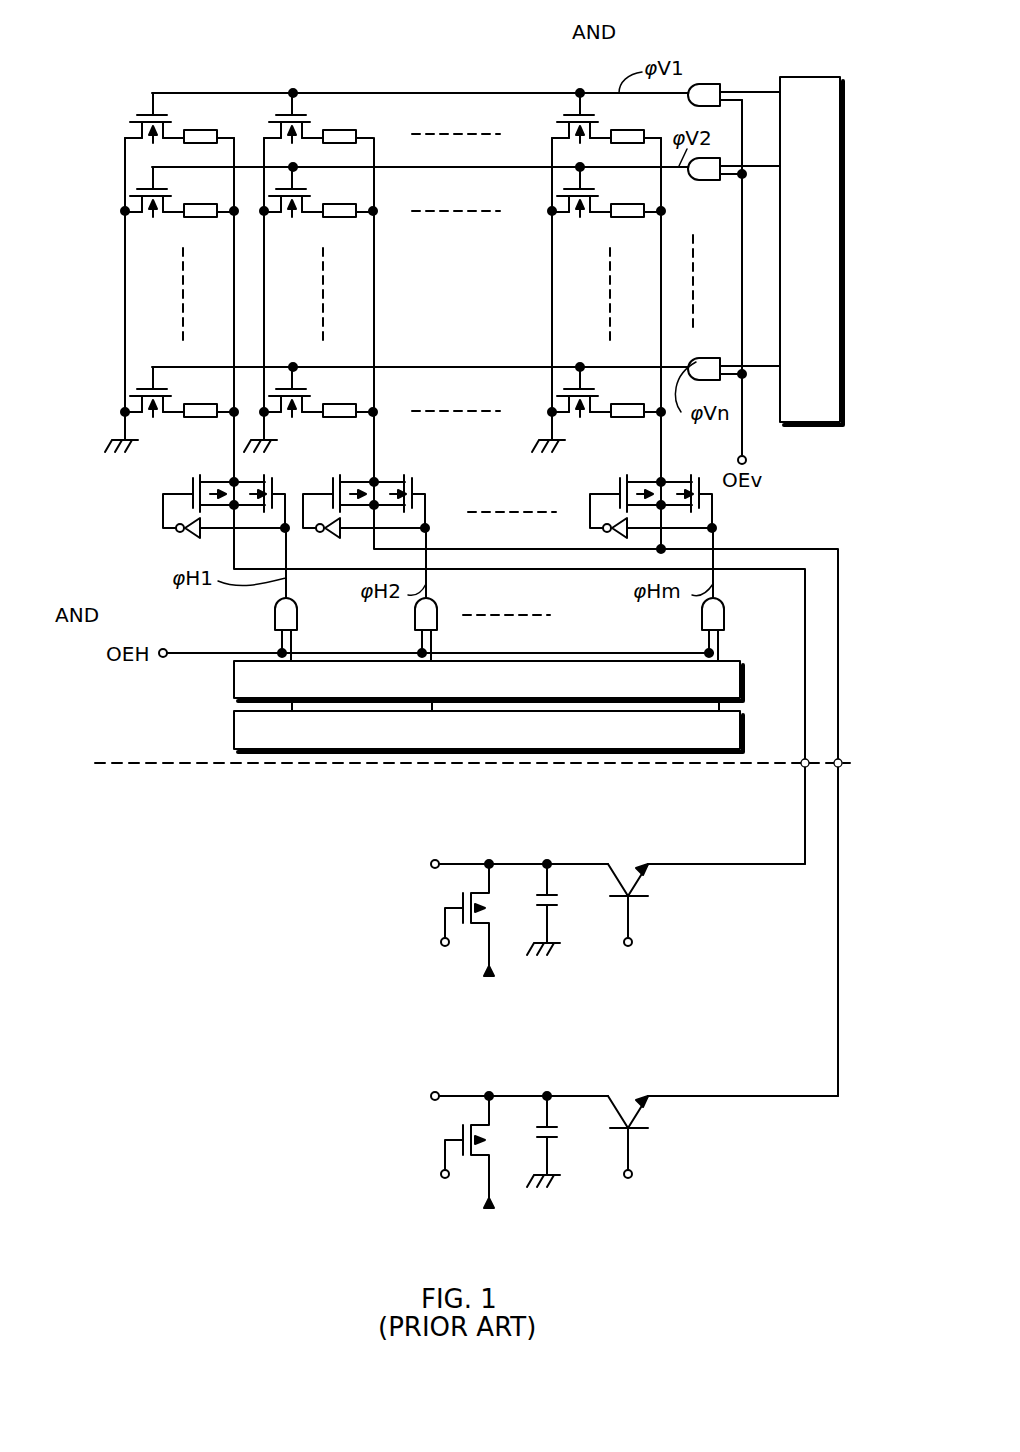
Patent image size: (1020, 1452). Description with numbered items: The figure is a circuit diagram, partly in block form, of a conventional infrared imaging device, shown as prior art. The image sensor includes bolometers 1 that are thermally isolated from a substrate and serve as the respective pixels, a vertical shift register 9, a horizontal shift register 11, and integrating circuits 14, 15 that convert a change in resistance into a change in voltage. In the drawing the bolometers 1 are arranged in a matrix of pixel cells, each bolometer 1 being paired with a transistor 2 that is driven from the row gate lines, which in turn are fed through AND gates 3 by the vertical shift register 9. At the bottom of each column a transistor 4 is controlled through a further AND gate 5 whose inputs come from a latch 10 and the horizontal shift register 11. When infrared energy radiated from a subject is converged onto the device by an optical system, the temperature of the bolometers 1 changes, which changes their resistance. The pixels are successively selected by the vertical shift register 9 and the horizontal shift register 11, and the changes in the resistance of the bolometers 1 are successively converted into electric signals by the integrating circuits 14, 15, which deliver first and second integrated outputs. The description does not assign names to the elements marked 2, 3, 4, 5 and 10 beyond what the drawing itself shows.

The bolometer 1 is at (208, 130).
The vertical selection transistor 2 is at (132, 114).
The AND gate (vertical) 3 is at (718, 86).
The horizontal selection transistor 4 is at (200, 478).
The AND gate (horizontal) 5 is at (276, 619).
The vertical shift register 9 is at (800, 77).
The latch 10 is at (234, 688).
The horizontal shift register 11 is at (234, 738).
The integrating circuit 14 is at (580, 843).
The integrating circuit 15 is at (612, 1082).